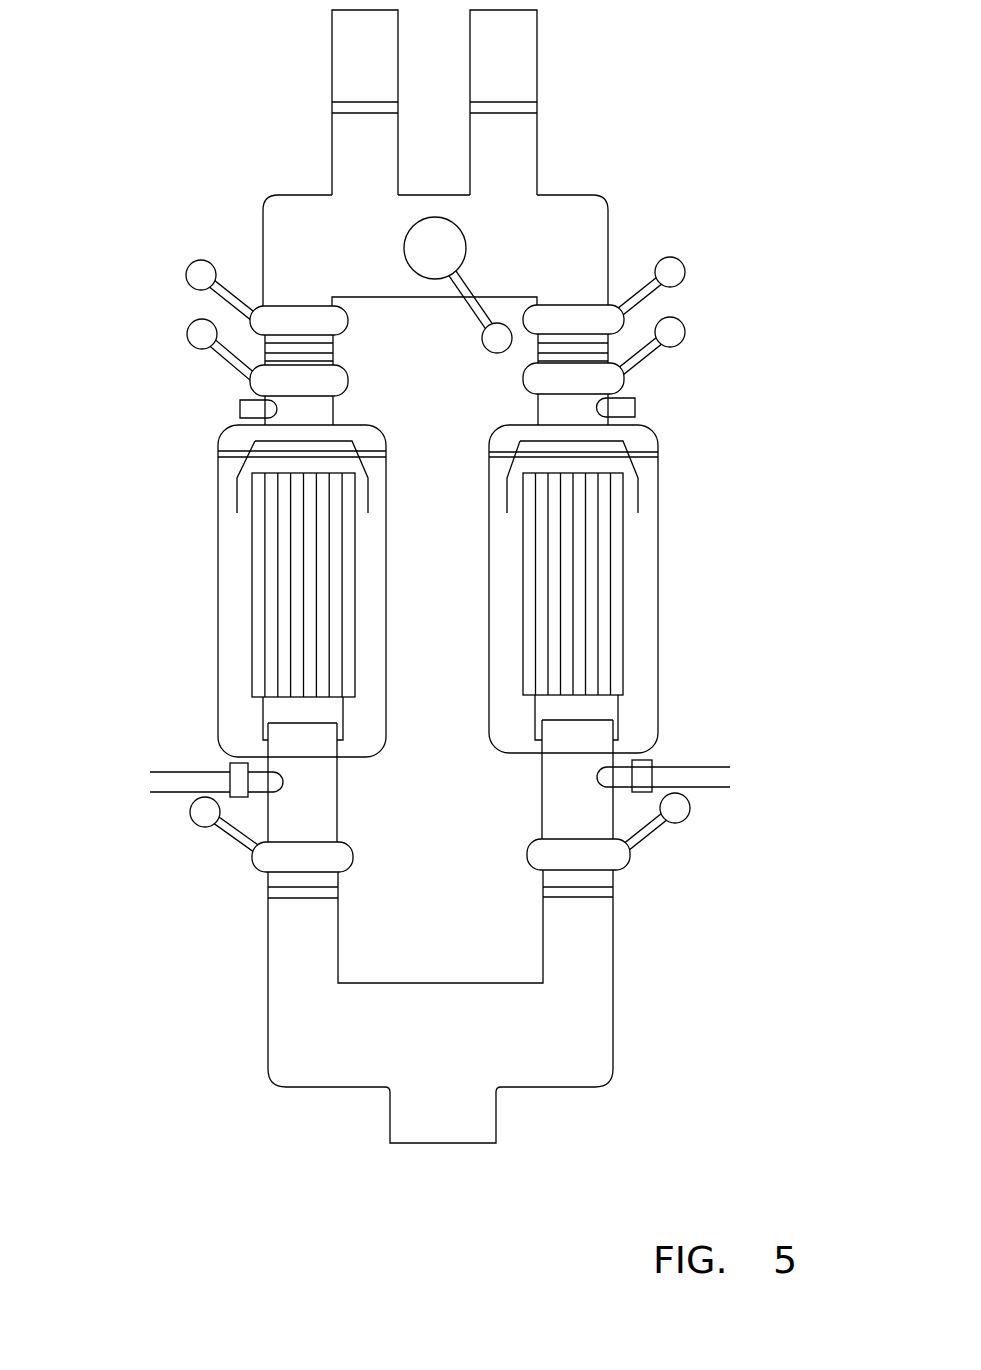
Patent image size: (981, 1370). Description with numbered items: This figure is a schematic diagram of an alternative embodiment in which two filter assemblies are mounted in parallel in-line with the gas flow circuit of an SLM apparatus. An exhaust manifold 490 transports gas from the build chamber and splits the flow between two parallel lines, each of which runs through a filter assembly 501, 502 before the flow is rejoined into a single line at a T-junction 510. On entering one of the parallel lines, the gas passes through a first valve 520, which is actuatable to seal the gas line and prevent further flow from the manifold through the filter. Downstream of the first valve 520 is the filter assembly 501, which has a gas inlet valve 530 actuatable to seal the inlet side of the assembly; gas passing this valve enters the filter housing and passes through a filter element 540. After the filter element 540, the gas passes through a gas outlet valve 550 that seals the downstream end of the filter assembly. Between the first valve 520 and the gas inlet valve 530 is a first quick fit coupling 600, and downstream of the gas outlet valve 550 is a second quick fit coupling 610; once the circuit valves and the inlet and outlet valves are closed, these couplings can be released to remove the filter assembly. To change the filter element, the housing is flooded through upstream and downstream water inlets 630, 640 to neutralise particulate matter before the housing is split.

The exhaust manifold 490 is at (332, 128).
The first valve 520 is at (348, 320).
The first quick fit coupling 600 is at (333, 350).
The gas inlet valve 530 is at (348, 380).
The upstream water inlet 630 is at (232, 408).
The filter assembly 501 is at (208, 536).
The filter element 540 is at (292, 620).
The filter assembly 502 is at (672, 583).
The downstream water inlet 640 is at (138, 781).
The gas outlet valve 550 is at (354, 857).
The second quick fit coupling 610 is at (340, 895).
The T-junction 510 is at (268, 968).